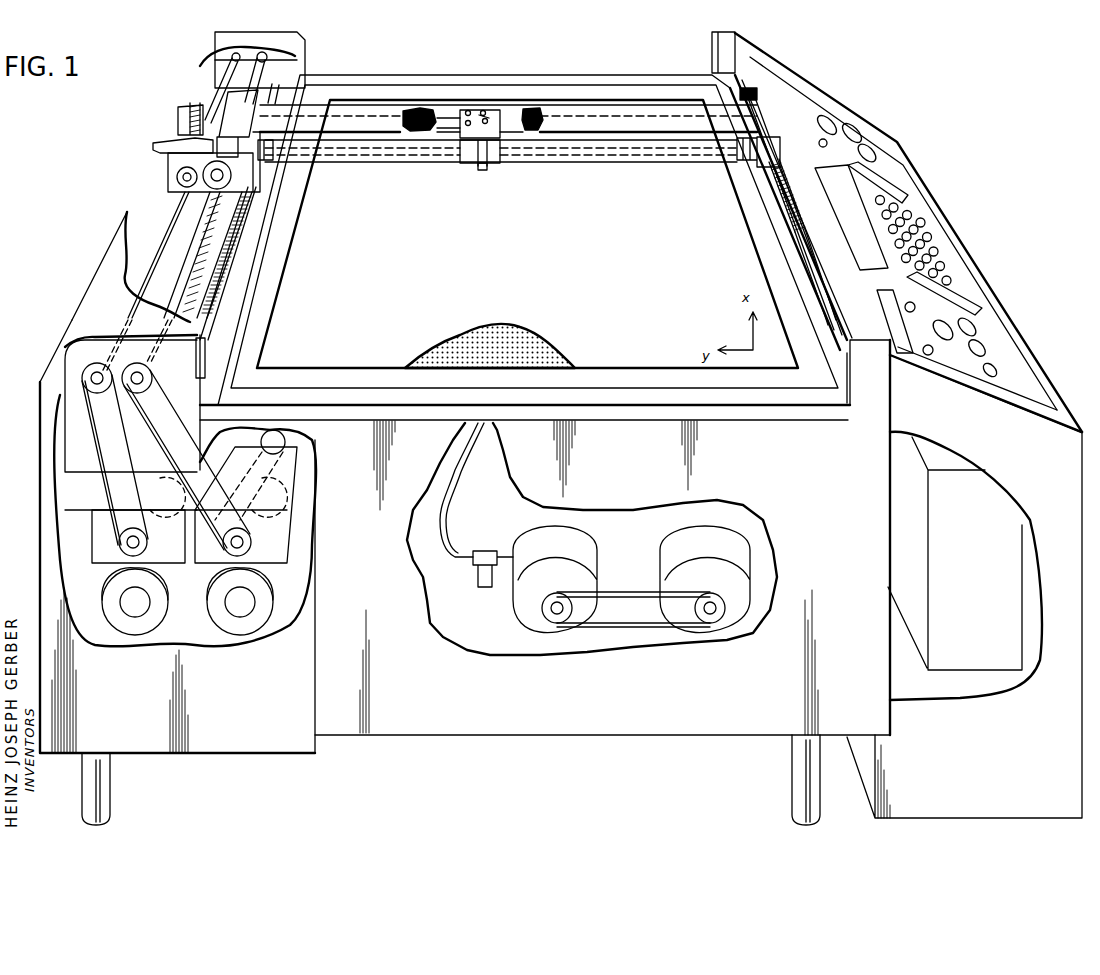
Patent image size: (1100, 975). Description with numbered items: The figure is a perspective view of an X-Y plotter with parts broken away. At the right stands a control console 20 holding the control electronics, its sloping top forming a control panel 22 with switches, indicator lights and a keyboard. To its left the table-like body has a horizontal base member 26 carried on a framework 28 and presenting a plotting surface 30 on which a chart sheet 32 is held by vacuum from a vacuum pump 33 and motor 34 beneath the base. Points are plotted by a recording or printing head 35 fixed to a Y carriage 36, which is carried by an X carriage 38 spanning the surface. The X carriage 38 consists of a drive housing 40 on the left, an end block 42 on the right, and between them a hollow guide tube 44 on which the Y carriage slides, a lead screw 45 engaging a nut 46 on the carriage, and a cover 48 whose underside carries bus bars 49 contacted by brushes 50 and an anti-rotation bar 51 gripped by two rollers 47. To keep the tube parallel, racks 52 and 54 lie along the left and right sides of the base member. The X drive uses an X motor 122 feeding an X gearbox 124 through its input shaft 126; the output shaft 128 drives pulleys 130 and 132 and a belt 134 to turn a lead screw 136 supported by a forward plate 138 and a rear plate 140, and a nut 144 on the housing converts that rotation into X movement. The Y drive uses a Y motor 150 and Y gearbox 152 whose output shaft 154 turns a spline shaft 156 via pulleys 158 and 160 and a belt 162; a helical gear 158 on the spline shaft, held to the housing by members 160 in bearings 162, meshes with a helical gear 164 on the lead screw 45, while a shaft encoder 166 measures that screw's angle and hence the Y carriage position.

The control console 20 is at (1050, 470).
The control panel 22 is at (1006, 348).
The base member 26 is at (807, 410).
The framework 28 is at (792, 753).
The plotting surface 30 is at (552, 347).
The chart sheet 32 is at (520, 265).
The vacuum pump 33 is at (580, 538).
The motor 34 is at (677, 537).
The recording or printing head 35 is at (486, 168).
The Y carriage 36 is at (500, 160).
The X carriage 38 is at (308, 88).
The drive housing 40 is at (172, 165).
The end block 42 is at (780, 135).
The guide tube 44 is at (636, 160).
The lead screw 45 is at (437, 125).
The nut 46 is at (492, 118).
The rollers 47 is at (485, 112).
The cover 48 is at (366, 106).
The bus bars 49 is at (420, 110).
The brushes 50 is at (470, 112).
The anti-rotation bar 51 is at (434, 128).
The rack 52 is at (218, 263).
The rack 54 is at (787, 212).
The X motor 122 is at (242, 628).
The X gearbox 124 is at (300, 494).
The input shaft 126 is at (285, 441).
The output shaft 128 is at (250, 541).
The pulley 130 is at (248, 543).
The pulley 132 is at (148, 378).
The belt 134 is at (170, 396).
The lead screw 136 is at (200, 242).
The forward plate 138 is at (203, 374).
The rear plate 140 is at (306, 72).
The nut 144 is at (177, 177).
The Y motor 150 is at (150, 628).
The Y gearbox 152 is at (90, 528).
The output shaft 154 is at (147, 549).
The spline shaft 156 is at (166, 208).
The pulley / helical gear 158 is at (190, 143).
The pulley / transverse members 160 is at (85, 372).
The belt / bearings 162 is at (96, 435).
The helical gear 164 is at (198, 113).
The shaft encoder 166 is at (226, 130).